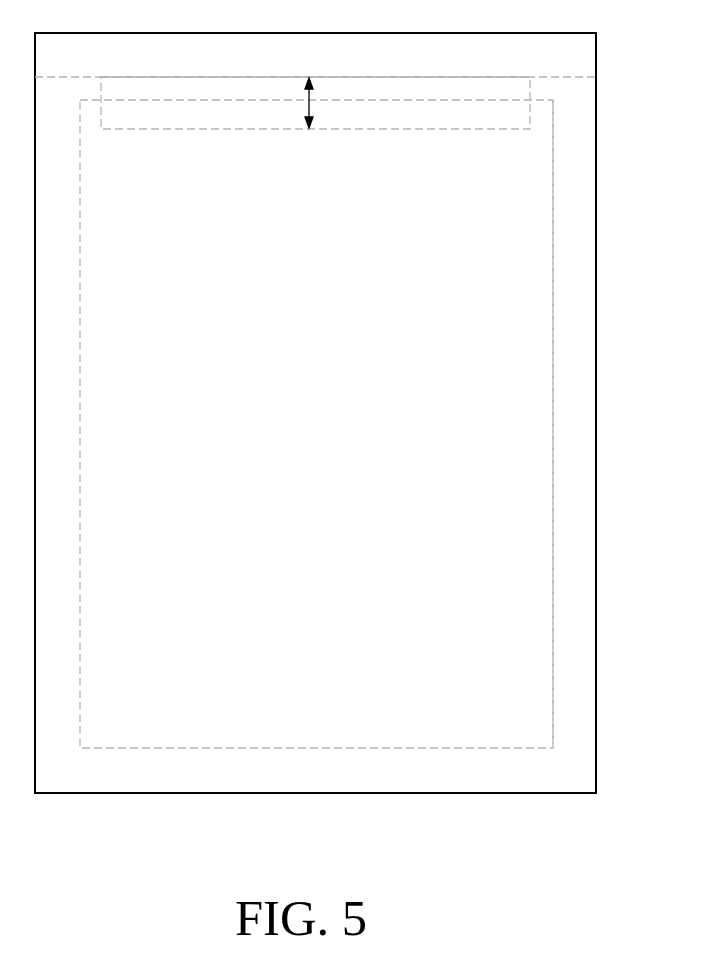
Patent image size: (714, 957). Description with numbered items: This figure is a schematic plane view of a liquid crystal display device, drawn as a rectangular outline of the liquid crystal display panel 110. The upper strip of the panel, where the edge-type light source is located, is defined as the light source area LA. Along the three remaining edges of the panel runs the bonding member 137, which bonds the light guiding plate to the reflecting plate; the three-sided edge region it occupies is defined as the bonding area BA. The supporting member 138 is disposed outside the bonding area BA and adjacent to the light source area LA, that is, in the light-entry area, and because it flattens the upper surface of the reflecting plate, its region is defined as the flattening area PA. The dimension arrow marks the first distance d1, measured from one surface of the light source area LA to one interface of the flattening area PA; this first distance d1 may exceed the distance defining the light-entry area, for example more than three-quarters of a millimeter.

The liquid crystal display panel 110 is at (596, 172).
The bonding member 137 is at (553, 302).
The supporting member 138 is at (512, 130).
The light source area LA is at (482, 67).
The flattening area PA is at (482, 114).
The bonding area BA is at (577, 258).
The first distance d1 is at (321, 103).